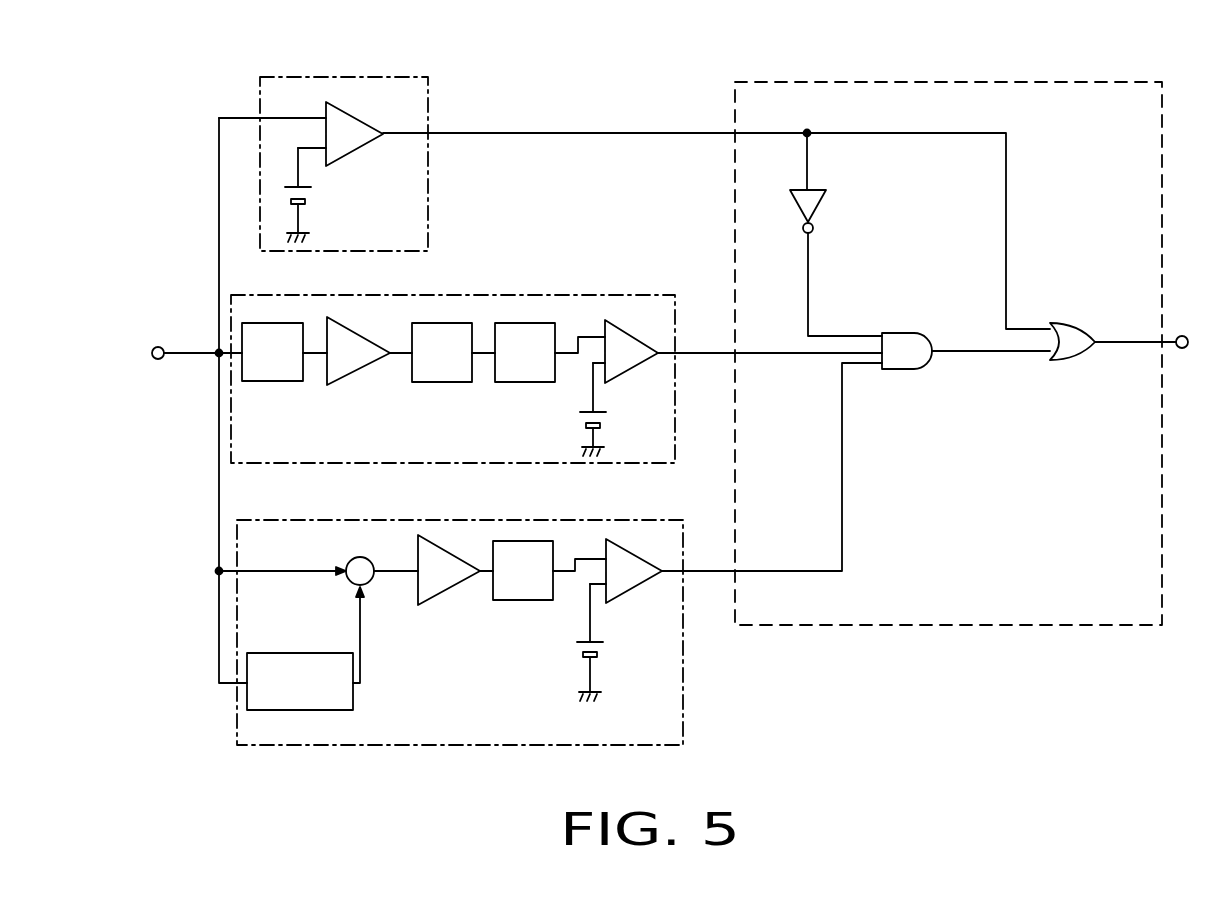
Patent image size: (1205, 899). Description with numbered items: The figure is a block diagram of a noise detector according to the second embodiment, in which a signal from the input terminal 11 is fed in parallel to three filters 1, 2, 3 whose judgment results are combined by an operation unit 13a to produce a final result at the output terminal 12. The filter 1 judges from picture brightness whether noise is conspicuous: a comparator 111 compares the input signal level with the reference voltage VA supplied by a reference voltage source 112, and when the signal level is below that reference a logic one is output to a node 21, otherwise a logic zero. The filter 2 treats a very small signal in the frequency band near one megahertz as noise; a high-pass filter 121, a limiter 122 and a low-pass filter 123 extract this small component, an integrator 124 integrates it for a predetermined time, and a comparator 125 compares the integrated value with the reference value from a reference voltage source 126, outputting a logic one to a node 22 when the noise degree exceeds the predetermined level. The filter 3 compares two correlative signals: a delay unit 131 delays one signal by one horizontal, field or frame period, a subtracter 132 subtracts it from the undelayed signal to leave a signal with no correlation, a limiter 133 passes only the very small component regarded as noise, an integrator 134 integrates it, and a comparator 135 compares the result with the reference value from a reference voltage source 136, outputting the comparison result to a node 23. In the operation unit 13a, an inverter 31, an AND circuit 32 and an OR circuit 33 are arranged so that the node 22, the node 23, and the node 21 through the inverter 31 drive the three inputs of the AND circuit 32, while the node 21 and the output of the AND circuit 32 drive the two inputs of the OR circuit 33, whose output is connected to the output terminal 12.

The filter 1 is at (438, 92).
The filter 2 is at (448, 295).
The filter 3 is at (437, 520).
The input terminal 11 is at (160, 346).
The output terminal 12 is at (1188, 334).
The operation unit 13a is at (1045, 80).
The node 21 is at (661, 130).
The node 22 is at (698, 348).
The node 23 is at (700, 558).
The inverter 31 is at (826, 203).
The AND circuit 32 is at (906, 369).
The OR circuit 33 is at (1070, 322).
The comparator 111 is at (340, 102).
The reference voltage source 112 is at (305, 213).
The high-pass filter 121 is at (275, 381).
The limiter 122 is at (350, 375).
The low-pass filter 123 is at (445, 382).
The integrator 124 is at (518, 382).
The comparator 125 is at (632, 371).
The reference voltage source 126 is at (607, 420).
The delay unit 131 is at (353, 697).
The subtracter 132 is at (372, 580).
The limiter 133 is at (450, 598).
The integrator 134 is at (523, 600).
The comparator 135 is at (633, 590).
The reference voltage source 136 is at (603, 648).